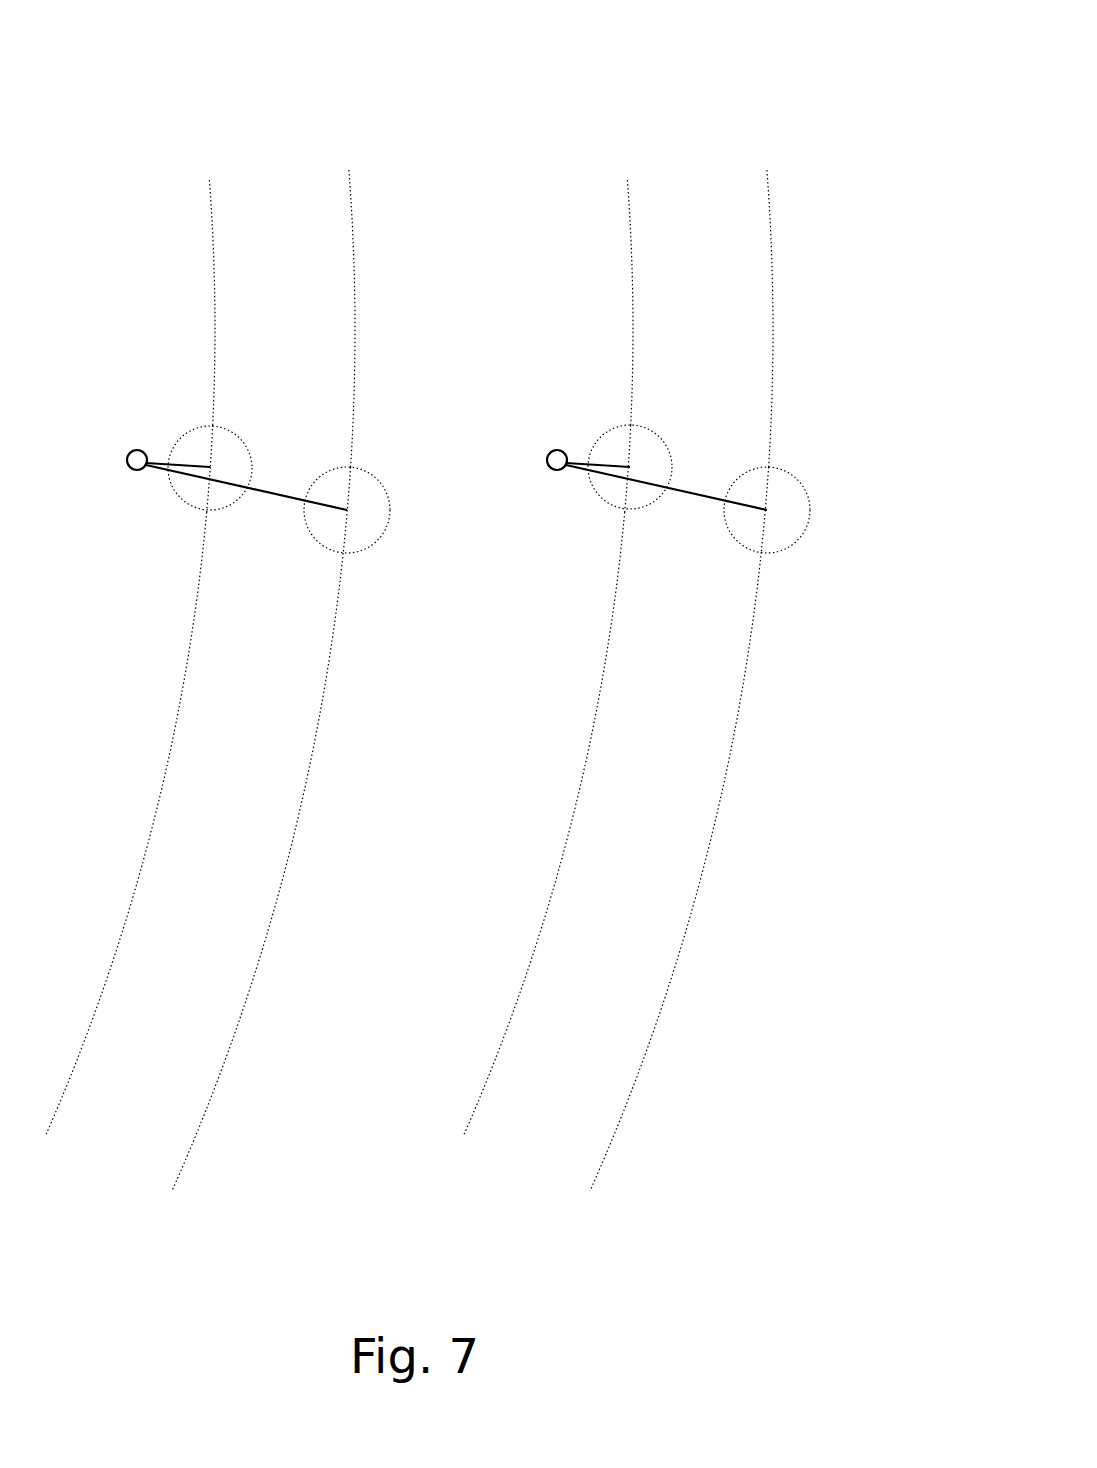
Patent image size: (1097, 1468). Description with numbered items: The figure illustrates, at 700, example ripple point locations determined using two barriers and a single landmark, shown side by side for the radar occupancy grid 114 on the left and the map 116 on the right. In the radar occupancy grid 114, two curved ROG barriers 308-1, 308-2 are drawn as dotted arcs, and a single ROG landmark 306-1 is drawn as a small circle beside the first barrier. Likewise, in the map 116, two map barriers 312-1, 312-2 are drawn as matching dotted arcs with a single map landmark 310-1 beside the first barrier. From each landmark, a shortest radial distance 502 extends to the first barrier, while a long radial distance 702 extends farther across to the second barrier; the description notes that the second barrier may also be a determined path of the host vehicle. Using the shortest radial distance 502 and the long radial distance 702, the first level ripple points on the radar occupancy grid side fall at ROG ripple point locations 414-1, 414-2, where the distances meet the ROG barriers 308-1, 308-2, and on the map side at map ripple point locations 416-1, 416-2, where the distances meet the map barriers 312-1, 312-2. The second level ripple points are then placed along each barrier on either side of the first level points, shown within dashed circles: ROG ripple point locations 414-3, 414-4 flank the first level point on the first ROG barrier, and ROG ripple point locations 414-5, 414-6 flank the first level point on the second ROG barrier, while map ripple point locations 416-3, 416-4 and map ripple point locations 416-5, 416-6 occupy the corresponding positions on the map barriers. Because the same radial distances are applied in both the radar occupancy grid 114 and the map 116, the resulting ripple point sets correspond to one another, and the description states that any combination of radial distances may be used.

The example ripple point locations using two barriers 700 is at (760, 48).
The radar occupancy grid 114 is at (249, 149).
The map 116 is at (669, 149).
The first ROG barrier 308-1 is at (188, 657).
The second ROG barrier 308-2 is at (318, 680).
The first map barrier 312-1 is at (607, 657).
The second map barrier 312-2 is at (736, 680).
The ROG landmark 306-1 is at (134, 450).
The map landmark 310-1 is at (553, 469).
The shortest radial distance 502 is at (187, 465).
The long radial distance 702 is at (327, 503).
The ROG ripple point location 414-1 is at (210, 467).
The ROG ripple point location 414-2 is at (347, 510).
The ROG ripple point location 414-3 is at (213, 425).
The ROG ripple point location 414-4 is at (207, 512).
The ROG ripple point location 414-5 is at (349, 467).
The ROG ripple point location 414-6 is at (343, 553).
The map ripple point location 416-1 is at (630, 467).
The map ripple point location 416-2 is at (767, 510).
The map ripple point location 416-3 is at (631, 425).
The map ripple point location 416-4 is at (625, 512).
The map ripple point location 416-5 is at (768, 467).
The map ripple point location 416-6 is at (761, 552).